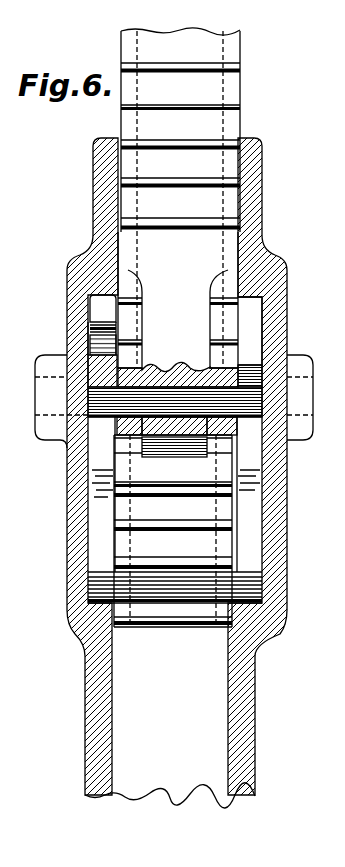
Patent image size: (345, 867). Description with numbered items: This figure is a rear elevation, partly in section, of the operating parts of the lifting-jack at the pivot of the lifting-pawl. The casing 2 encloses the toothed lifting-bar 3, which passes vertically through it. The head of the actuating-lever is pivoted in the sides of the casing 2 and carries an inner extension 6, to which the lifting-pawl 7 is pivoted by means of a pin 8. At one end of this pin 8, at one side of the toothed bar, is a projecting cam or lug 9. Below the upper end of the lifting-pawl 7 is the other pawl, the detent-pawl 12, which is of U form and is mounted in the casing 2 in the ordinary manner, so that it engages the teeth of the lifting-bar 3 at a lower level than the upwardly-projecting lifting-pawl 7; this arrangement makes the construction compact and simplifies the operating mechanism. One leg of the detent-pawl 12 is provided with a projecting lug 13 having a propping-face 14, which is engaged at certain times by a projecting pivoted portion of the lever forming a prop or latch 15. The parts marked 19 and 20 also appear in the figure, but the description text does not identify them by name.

The casing 2 is at (67, 326).
The lifting-bar 3 is at (177, 327).
The inner extension 6 is at (128, 443).
The lifting-pawl 7 is at (190, 309).
The pin 8 is at (175, 402).
The projecting cam or lug 9 is at (70, 420).
The detent-pawl 12 is at (175, 510).
The projecting lug 13 is at (103, 313).
The propping-face 14 is at (103, 345).
The prop or latch 15 is at (88, 378).
The washer 19 is at (112, 362).
The bushing 20 is at (67, 352).